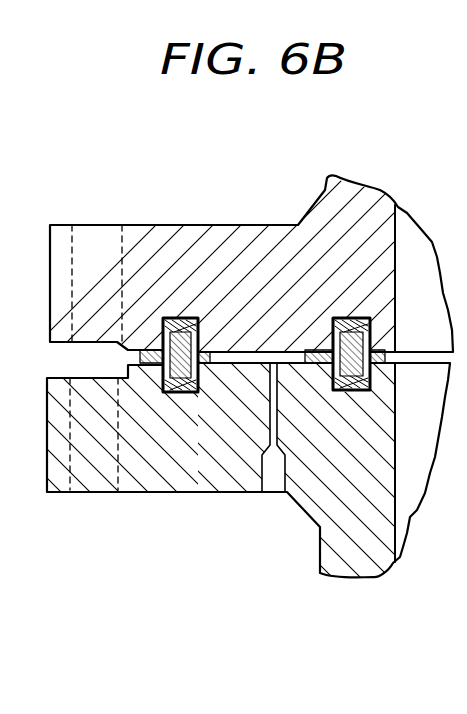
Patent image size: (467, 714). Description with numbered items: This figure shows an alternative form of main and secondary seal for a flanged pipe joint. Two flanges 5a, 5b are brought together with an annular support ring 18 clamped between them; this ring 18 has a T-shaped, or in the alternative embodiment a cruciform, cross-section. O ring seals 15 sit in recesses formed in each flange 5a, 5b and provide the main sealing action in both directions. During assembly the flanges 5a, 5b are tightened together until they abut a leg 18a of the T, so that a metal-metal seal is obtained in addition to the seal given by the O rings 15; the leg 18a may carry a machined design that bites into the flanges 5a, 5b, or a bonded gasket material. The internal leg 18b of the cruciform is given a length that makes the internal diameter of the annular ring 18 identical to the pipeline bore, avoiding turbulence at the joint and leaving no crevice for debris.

The flange 5a is at (247, 240).
The flange 5b is at (203, 492).
The O ring seal 15 is at (178, 318).
The annular ring 18 is at (181, 390).
The leg 18a is at (150, 357).
The internal leg 18b is at (383, 392).